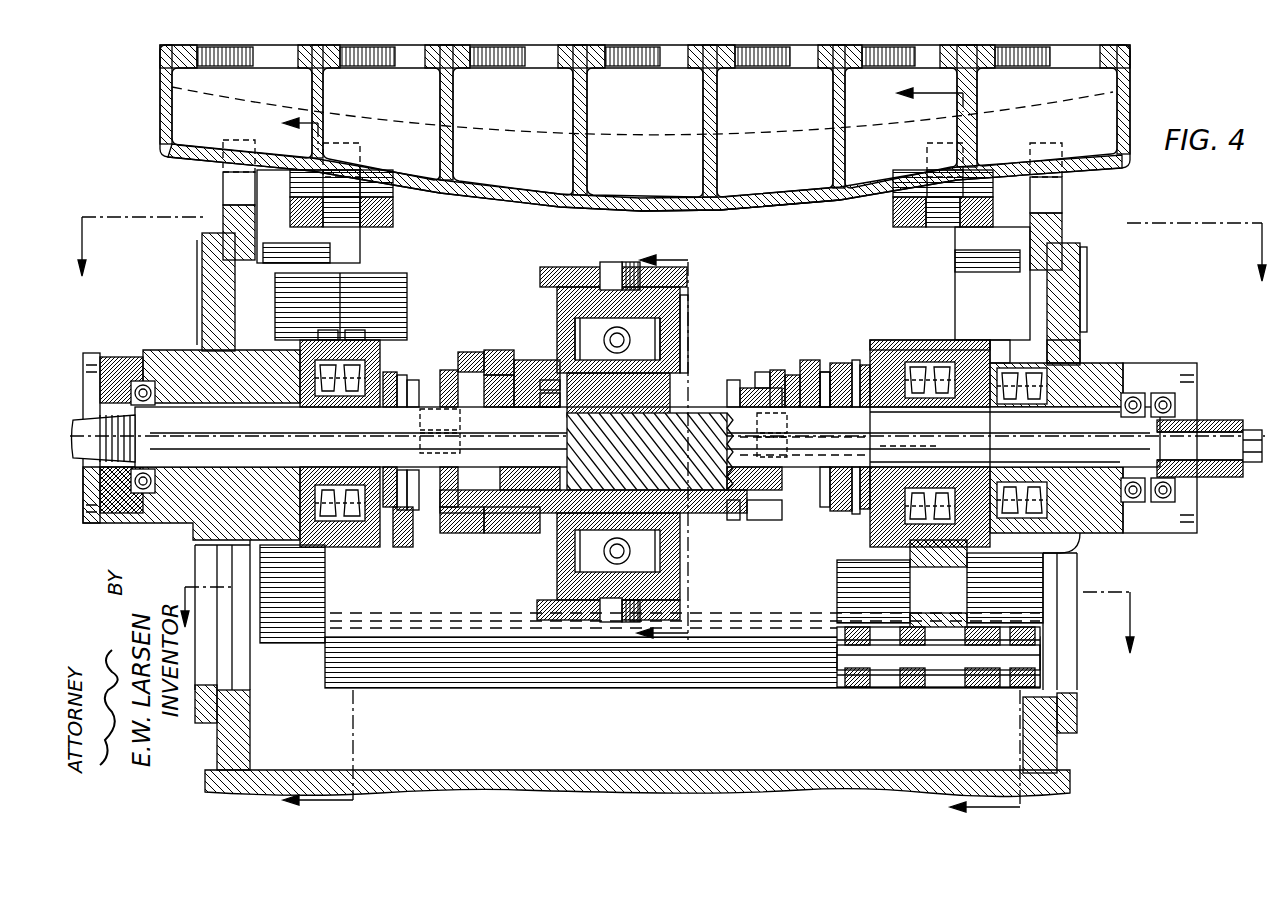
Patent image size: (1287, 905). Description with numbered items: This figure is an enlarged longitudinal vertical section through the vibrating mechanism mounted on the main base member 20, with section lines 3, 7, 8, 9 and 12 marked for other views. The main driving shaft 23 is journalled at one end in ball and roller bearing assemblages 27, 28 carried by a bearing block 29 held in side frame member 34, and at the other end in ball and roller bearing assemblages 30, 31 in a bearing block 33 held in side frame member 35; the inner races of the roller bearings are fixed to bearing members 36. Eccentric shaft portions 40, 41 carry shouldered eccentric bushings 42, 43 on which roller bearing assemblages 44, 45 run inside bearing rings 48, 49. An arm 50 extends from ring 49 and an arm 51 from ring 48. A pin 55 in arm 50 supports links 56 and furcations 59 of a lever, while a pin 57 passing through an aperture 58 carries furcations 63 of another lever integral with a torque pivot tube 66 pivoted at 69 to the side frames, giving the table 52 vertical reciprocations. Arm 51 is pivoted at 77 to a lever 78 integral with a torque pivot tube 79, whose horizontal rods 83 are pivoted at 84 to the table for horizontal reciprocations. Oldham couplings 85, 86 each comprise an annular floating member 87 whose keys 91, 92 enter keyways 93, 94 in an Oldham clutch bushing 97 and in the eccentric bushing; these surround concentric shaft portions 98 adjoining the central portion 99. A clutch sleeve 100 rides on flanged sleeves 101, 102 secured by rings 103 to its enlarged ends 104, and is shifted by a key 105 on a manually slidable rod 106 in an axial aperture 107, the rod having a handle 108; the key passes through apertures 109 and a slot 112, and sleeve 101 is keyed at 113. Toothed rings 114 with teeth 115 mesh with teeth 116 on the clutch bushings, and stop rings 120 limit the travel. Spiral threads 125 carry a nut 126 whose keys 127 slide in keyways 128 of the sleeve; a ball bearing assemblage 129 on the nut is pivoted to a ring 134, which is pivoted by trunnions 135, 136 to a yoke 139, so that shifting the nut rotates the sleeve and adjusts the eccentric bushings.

The main base member 20 is at (1070, 775).
The main driving shaft 23 is at (86, 378).
The ball bearing assemblage 27 is at (143, 388).
The roller bearing assemblage 28 is at (230, 355).
The bearing block 29 is at (203, 274).
The ball bearing assemblage 30 is at (1163, 396).
The roller bearing assemblage 31 is at (1028, 350).
The bearing block 33 is at (1078, 300).
The side frame member 34 is at (226, 212).
The side frame member 35 is at (1062, 233).
The bearing members 36 is at (180, 356).
The eccentric shaft portion 40 is at (300, 430).
The eccentric shaft portion 41 is at (990, 430).
The eccentric bushing 42 is at (390, 380).
The eccentric bushing 43 is at (866, 380).
The roller bearing assemblage 44 is at (332, 336).
The roller bearing assemblage 45 is at (945, 344).
The bearing ring 48 is at (356, 338).
The bearing ring 49 is at (920, 342).
The arm 50 is at (944, 688).
The arm 51 is at (340, 290).
The article support or table 52 is at (1118, 66).
The pin 55 is at (838, 650).
The links 56 is at (838, 628).
The pin 57 is at (900, 583).
The aperture 58 is at (945, 585).
The furcations 59 is at (880, 690).
The furcations 63 is at (905, 553).
The torque pivot tube 66 is at (486, 686).
The pivot 69 is at (1088, 264).
The pivot 77 is at (298, 250).
The lever 78 is at (308, 232).
The torque pivot tube 79 is at (790, 212).
The horizontally extending rods 83 is at (352, 162).
The pivot 84 is at (388, 181).
The Oldham coupling 85 is at (388, 400).
The Oldham coupling 86 is at (830, 372).
The annular radially floating member 87 is at (432, 525).
The teeth or keys 91 is at (427, 420).
The teeth or keys 92 is at (406, 464).
The radial keyway 93 is at (448, 442).
The radial keyway 94 is at (420, 365).
The Oldham clutch bushing 97 is at (460, 540).
The concentric shaft portions 98 is at (844, 368).
The central concentric shaft portion 99 is at (556, 513).
The clutch sleeve 100 is at (760, 382).
The flanged sleeve 101 is at (536, 408).
The flanged sleeve 102 is at (750, 388).
The rings 103 is at (512, 366).
The enlarged ends 104 is at (528, 352).
The key 105 is at (755, 392).
The manually slidable rod 106 is at (1213, 432).
The axial aperture 107 is at (933, 446).
The operating handle 108 is at (1235, 468).
The apertures 109 is at (748, 518).
The slot 112 is at (788, 426).
The key 113 is at (528, 405).
The toothed rings 114 is at (472, 358).
The teeth 115 is at (452, 370).
The teeth 116 is at (496, 372).
The annular spacer or stop rings 120 is at (552, 460).
The right hand spiral threads 125 is at (585, 458).
The nut 126 is at (560, 393).
The splines or keys 127 is at (560, 384).
The keyways 128 is at (700, 372).
The ball bearing assemblage 129 is at (650, 343).
The ring 134 is at (638, 268).
The trunnion 135 is at (610, 268).
The trunnion 136 is at (604, 620).
The yoke 139 is at (537, 612).
The section line 3- 3 is at (672, 249).
The section line 7- 7 is at (958, 446).
The section line 8- 8 is at (320, 453).
The section line 9- 9 is at (656, 619).
The section line 12- 12 is at (663, 443).